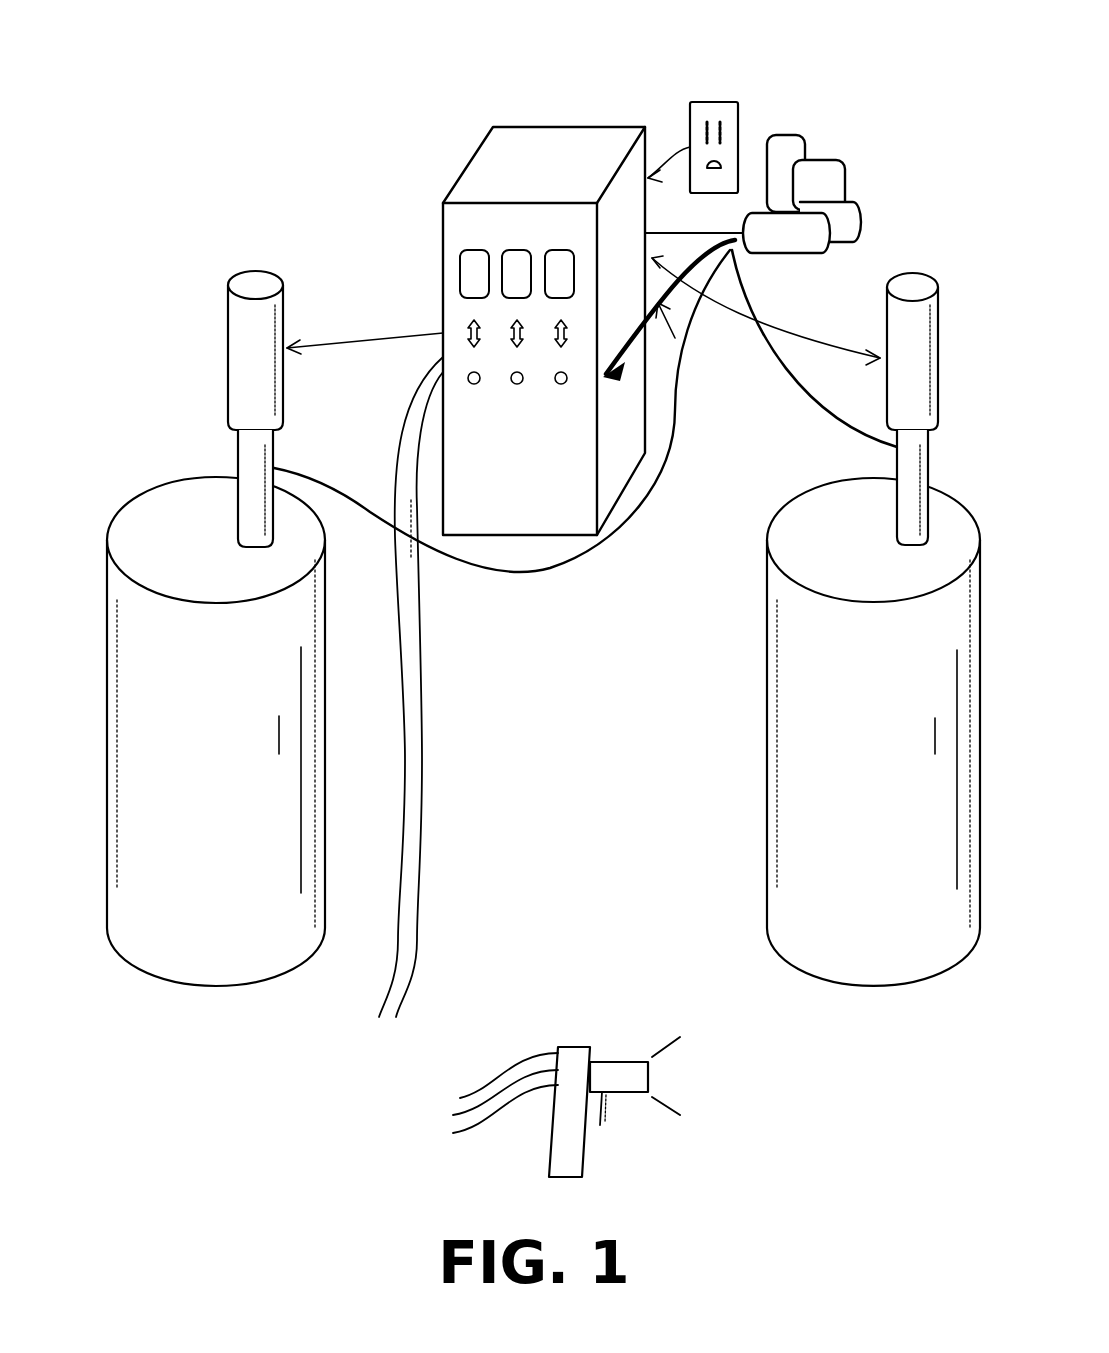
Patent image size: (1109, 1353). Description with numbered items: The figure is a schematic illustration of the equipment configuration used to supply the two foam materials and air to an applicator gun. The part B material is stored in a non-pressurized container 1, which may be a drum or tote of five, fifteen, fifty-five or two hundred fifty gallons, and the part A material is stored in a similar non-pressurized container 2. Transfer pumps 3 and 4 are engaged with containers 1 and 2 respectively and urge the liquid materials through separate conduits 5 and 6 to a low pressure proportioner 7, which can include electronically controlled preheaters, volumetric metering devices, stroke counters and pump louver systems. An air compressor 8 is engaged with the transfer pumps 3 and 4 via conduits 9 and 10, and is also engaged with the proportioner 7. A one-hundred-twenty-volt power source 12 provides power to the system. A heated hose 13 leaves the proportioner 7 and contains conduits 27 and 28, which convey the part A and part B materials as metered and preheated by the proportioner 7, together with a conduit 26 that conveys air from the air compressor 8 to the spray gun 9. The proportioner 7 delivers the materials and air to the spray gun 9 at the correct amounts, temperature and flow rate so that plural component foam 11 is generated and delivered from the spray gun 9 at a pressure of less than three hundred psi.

The container 1 is at (106, 718).
The container 2 is at (764, 687).
The transfer pump 3 is at (228, 360).
The transfer pump 4 is at (940, 360).
The conduit 5 is at (678, 413).
The conduit 6 is at (788, 390).
The low pressure proportioner 7 is at (462, 167).
The air compressor 8 is at (820, 177).
The conduit / spray gun 9 is at (375, 340).
The conduit 10 is at (790, 343).
The plural component foam 11 is at (697, 307).
The 120V power source 12 is at (713, 95).
The heated hose 13 is at (422, 753).
The conduit 26 is at (481, 1075).
The conduit 27 is at (481, 1100).
The conduit 28 is at (481, 1125).